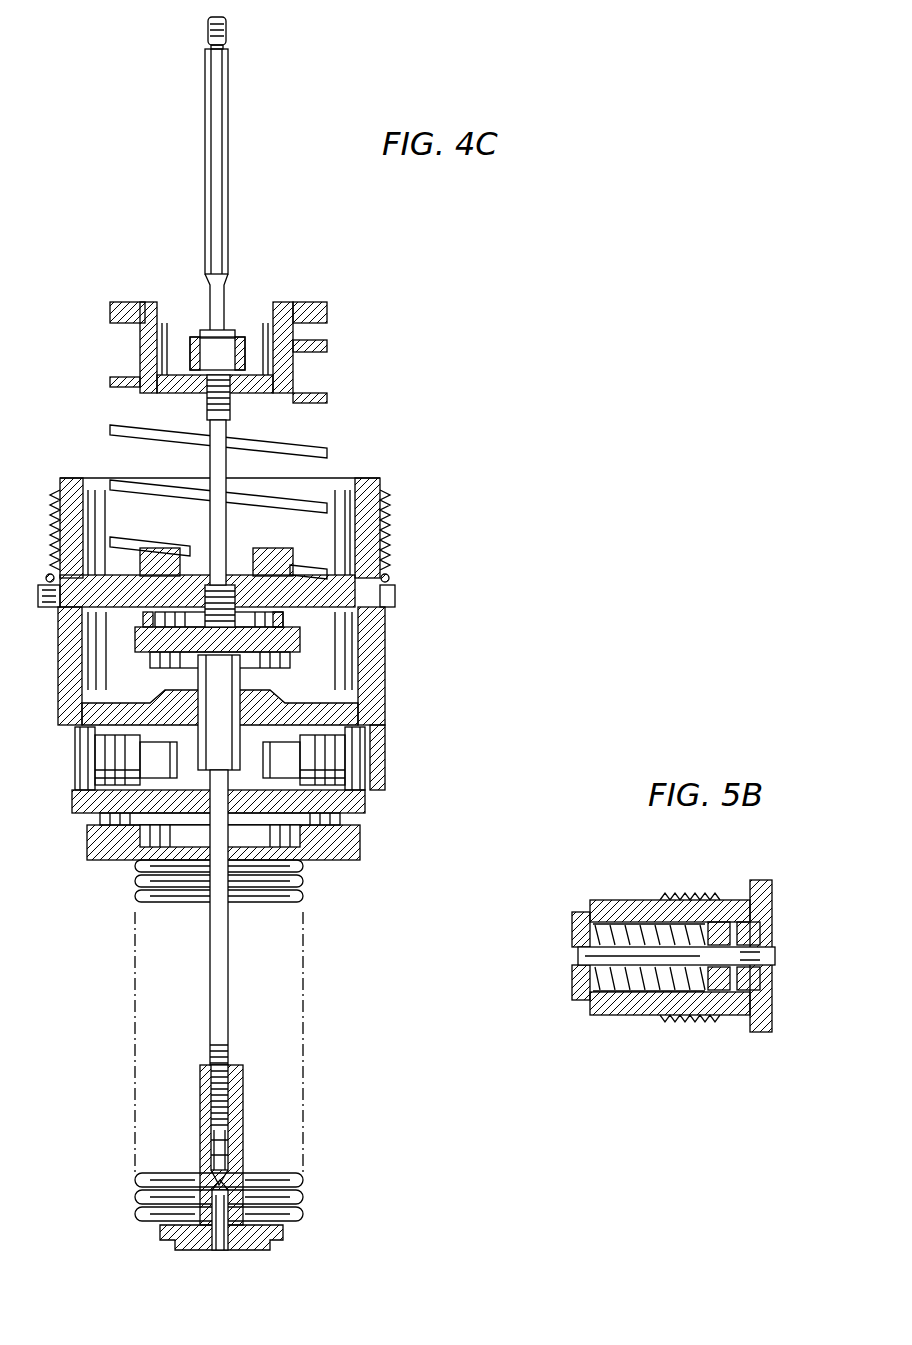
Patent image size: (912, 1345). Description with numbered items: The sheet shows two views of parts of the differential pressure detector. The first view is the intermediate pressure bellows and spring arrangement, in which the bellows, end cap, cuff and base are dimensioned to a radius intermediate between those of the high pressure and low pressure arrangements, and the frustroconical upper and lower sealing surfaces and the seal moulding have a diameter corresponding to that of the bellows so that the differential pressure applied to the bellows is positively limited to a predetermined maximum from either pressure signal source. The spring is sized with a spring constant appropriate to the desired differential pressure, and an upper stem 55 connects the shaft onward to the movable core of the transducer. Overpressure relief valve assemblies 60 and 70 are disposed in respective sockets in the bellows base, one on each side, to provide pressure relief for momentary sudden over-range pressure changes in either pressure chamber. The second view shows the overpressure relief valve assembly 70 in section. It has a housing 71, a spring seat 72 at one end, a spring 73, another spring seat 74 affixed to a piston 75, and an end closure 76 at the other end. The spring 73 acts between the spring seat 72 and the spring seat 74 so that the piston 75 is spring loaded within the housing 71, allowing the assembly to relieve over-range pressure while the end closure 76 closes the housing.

In FIG. 4C, the upper stem 55 is at (232, 192).
In FIG. 4C, the overpressure relief valve assembly 60 is at (78, 782).
In FIG. 4C, the overpressure relief valve assembly 70 is at (384, 778).
In FIG. 5B, the overpressure relief valve assembly 70 is at (682, 1068).
In FIG. 5B, the housing 71 is at (650, 900).
In FIG. 5B, the spring seat 72 is at (574, 935).
In FIG. 5B, the spring 73 is at (604, 920).
In FIG. 5B, the spring seat 74 is at (727, 930).
In FIG. 5B, the piston 75 is at (776, 955).
In FIG. 5B, the end closure 76 is at (770, 982).